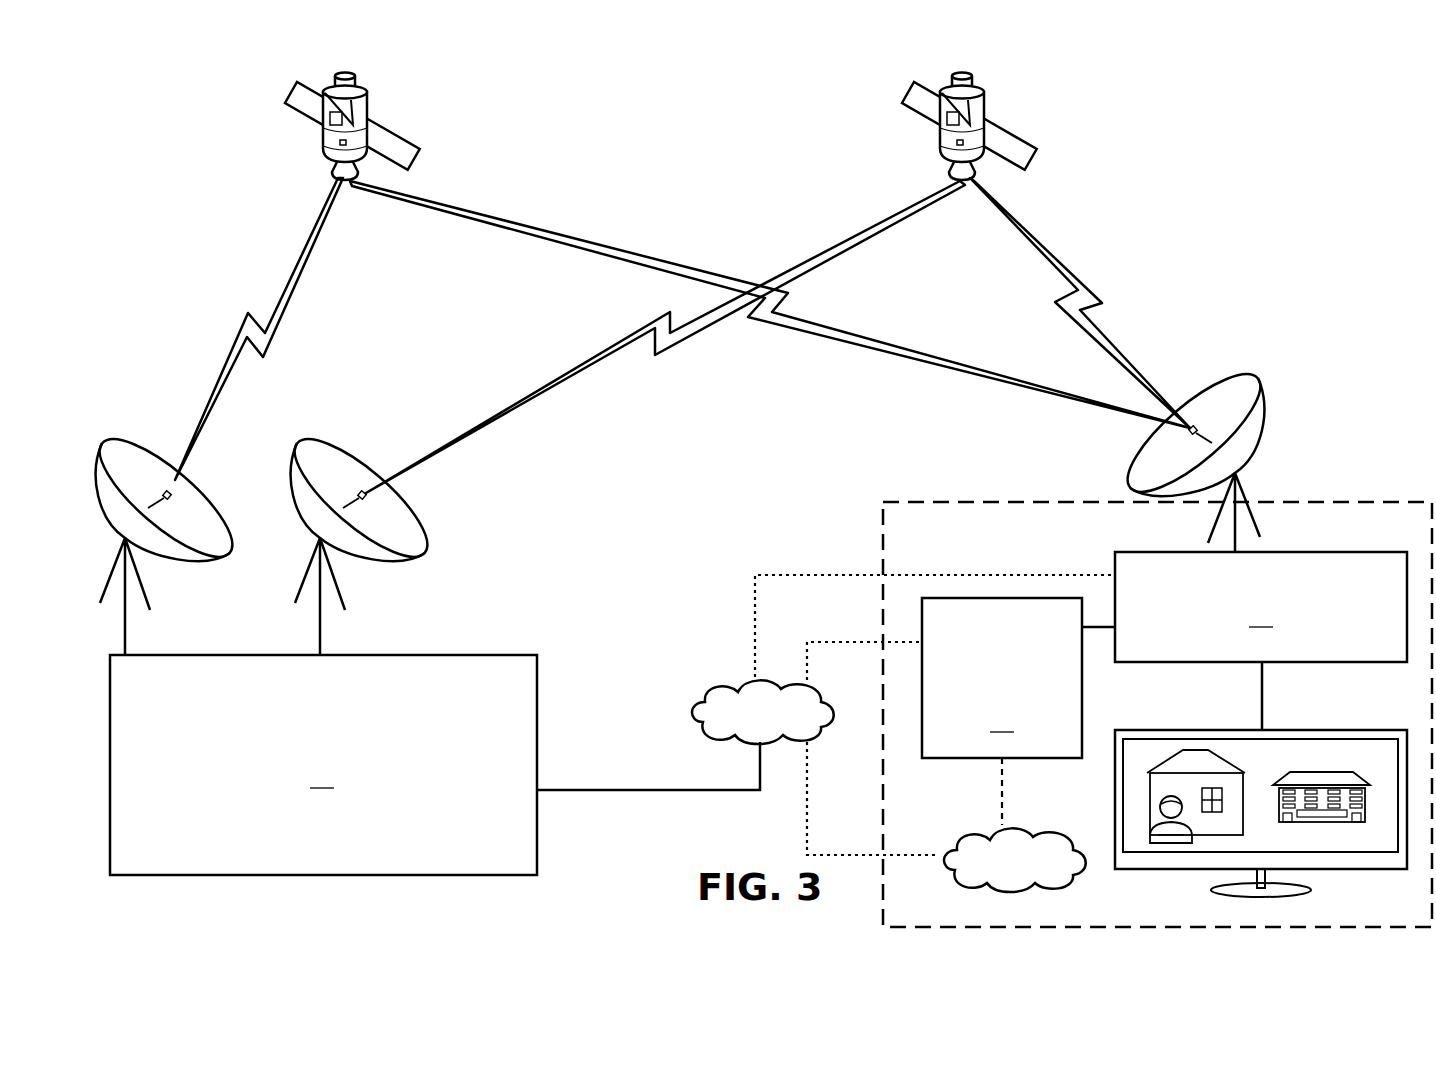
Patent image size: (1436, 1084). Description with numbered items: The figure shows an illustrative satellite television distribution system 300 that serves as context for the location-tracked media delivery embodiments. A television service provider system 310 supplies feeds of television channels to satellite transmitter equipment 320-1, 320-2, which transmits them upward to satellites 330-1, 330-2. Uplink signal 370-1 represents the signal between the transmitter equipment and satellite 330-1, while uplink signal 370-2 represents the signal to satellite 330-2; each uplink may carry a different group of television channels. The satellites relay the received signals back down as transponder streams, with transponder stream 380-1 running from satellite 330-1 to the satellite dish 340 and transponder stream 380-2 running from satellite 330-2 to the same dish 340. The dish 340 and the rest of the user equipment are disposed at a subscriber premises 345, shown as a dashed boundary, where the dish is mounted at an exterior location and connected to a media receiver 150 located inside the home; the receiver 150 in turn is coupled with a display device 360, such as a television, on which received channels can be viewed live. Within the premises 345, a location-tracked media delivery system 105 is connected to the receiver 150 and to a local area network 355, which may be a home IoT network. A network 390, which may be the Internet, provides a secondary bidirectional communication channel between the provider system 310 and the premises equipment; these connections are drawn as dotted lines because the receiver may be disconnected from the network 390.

The satellite television distribution system 300 is at (181, 152).
The satellite 330-1 is at (418, 114).
The satellite 330-2 is at (1044, 114).
The uplink signal 370-1 is at (293, 273).
The uplink signal 370-2 is at (819, 254).
The transponder stream 380-1 is at (517, 223).
The transponder stream 380-2 is at (1088, 234).
The satellite transmitter equipment 320-1 is at (118, 443).
The satellite transmitter equipment 320-2 is at (335, 410).
The satellite dish 340 is at (1239, 377).
The television service provider system 310 is at (323, 765).
The network 390 is at (694, 691).
The subscriber premises 345 is at (927, 500).
The location-tracked media delivery system 105 is at (1002, 678).
The local area network 355 is at (943, 839).
The media receiver 150 is at (1261, 607).
The display device 360 is at (1366, 730).